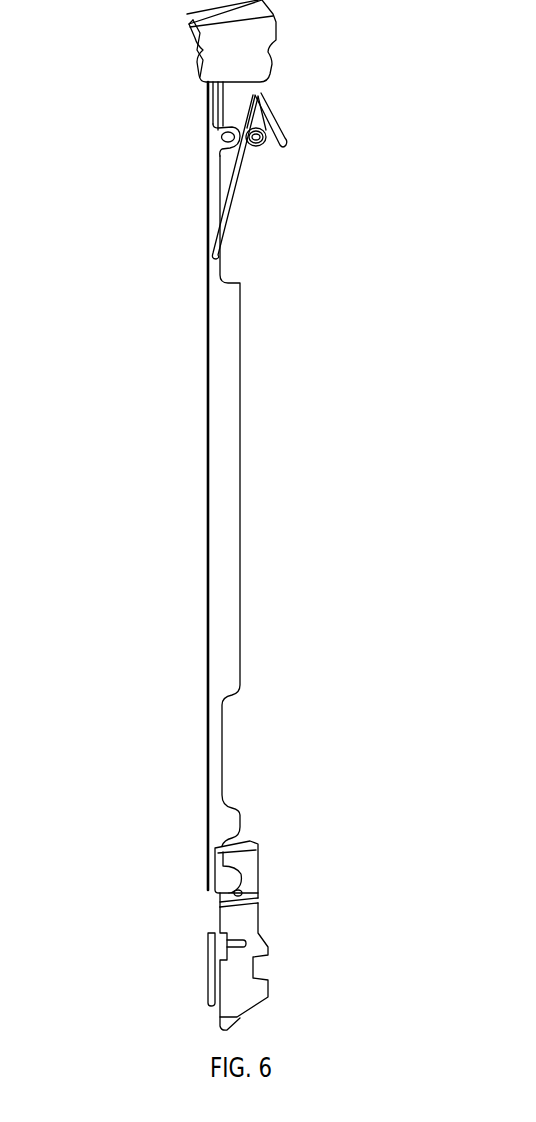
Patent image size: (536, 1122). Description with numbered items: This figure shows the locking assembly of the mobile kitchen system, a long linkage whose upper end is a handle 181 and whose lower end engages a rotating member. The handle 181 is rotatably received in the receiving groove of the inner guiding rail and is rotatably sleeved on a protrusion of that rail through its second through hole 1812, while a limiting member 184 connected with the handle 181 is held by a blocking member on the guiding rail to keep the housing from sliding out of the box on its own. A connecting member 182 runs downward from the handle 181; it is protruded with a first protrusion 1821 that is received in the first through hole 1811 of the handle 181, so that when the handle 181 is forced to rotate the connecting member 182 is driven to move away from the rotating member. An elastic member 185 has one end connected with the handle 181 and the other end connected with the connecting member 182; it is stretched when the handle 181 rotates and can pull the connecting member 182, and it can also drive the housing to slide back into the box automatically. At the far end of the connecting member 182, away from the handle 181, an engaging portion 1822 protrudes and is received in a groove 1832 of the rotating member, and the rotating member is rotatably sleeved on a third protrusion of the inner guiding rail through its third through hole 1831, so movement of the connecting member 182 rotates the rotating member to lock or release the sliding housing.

The handle 181 is at (193, 50).
The first through hole 1811 is at (221, 136).
The first protrusion 1821 is at (218, 152).
The limiting member 184 is at (275, 123).
The second through hole 1812 is at (283, 144).
The elastic member 185 is at (237, 200).
The connecting member 182 is at (218, 594).
The engaging portion 1822 is at (225, 882).
The groove 1832 is at (237, 884).
The third through hole 1831 is at (247, 895).